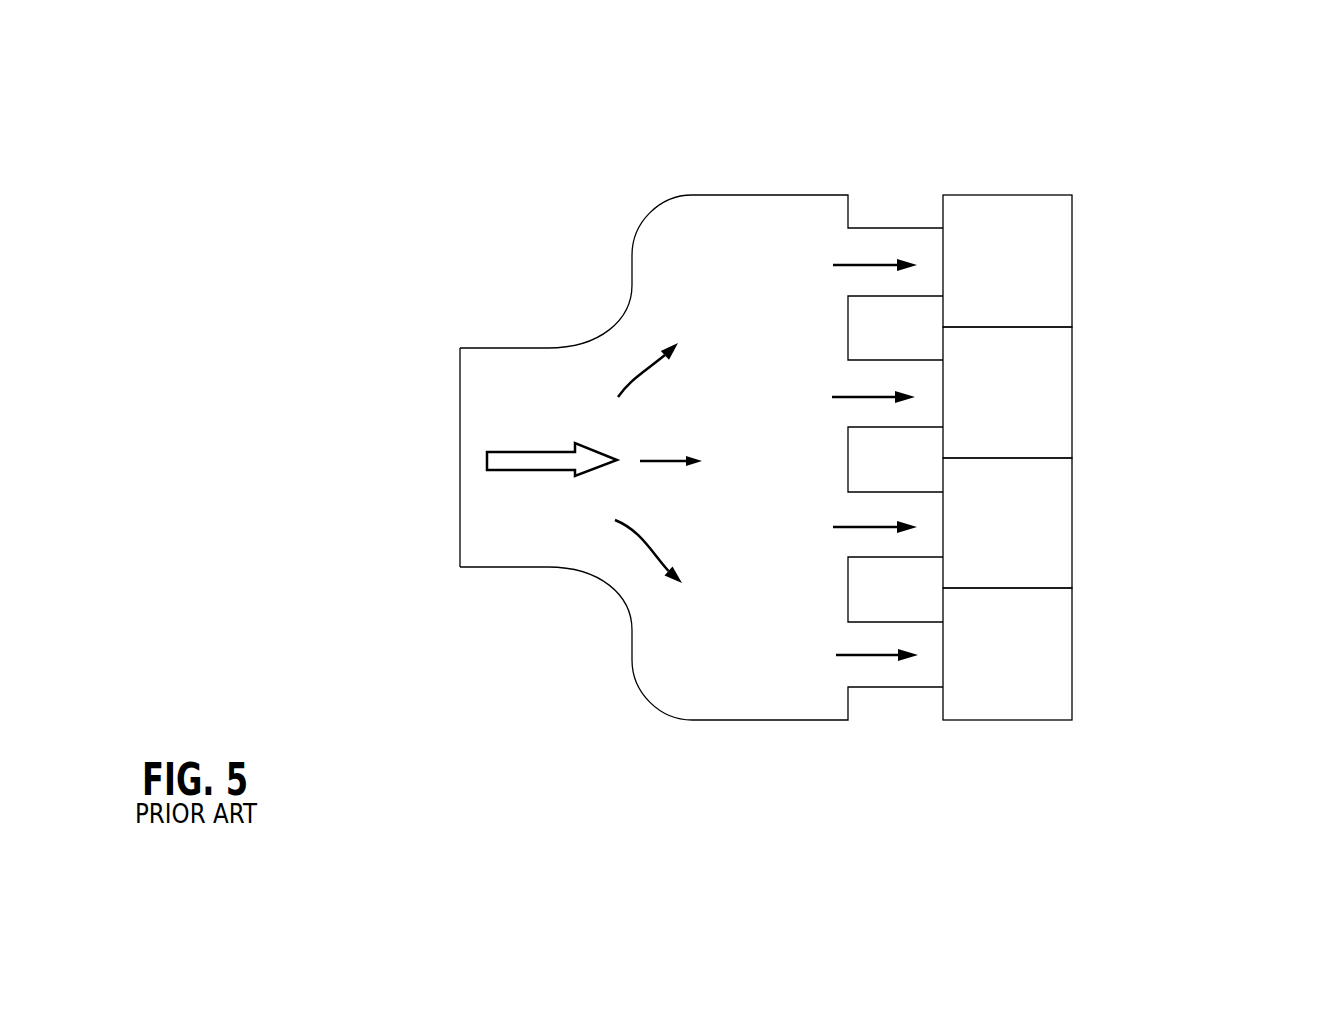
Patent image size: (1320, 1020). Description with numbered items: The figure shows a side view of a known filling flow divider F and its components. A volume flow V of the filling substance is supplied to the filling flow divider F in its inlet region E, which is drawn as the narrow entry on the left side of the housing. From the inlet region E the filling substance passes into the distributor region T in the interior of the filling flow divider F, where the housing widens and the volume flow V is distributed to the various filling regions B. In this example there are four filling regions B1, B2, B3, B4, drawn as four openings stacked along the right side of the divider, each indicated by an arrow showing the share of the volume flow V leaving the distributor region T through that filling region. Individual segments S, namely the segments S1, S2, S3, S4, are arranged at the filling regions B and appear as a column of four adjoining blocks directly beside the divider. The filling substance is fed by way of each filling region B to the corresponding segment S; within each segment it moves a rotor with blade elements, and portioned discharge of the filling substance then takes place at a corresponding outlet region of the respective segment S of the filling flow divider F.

The filling flow divider F is at (442, 177).
The inlet region E is at (498, 348).
The distributor region T is at (695, 657).
The volume flow V is at (527, 462).
The filling regions B is at (1012, 374).
The first filling region B1 is at (928, 281).
The second filling region B2 is at (931, 387).
The third filling region B3 is at (928, 520).
The fourth filling region B4 is at (930, 650).
The segments S is at (1093, 403).
The first segment S1 is at (1052, 305).
The second segment S2 is at (1042, 441).
The third segment S3 is at (1053, 573).
The fourth segment S4 is at (1052, 703).